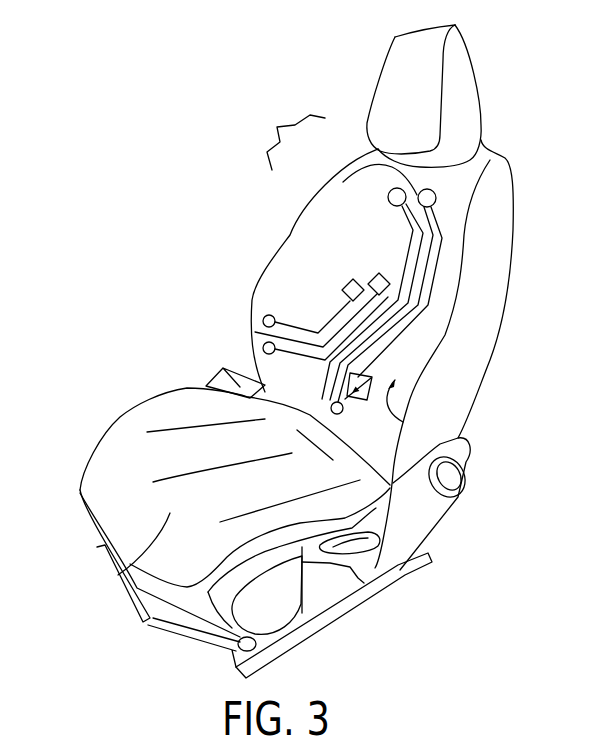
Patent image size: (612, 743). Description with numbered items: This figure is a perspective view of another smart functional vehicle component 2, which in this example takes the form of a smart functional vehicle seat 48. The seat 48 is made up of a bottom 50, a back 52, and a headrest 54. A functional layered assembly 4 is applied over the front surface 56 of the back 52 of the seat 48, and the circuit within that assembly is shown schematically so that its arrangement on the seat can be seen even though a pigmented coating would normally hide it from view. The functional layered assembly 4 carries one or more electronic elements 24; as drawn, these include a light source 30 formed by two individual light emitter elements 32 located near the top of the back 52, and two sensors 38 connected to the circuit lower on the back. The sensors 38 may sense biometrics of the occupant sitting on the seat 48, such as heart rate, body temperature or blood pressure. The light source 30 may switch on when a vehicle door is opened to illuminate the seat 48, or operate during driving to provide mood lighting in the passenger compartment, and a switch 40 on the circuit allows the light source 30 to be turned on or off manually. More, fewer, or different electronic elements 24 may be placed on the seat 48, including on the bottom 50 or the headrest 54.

The smart functional vehicle component 2 is at (289, 351).
The smart functional vehicle seat 48 is at (330, 60).
The light source 30 is at (266, 137).
The electronic elements 24 is at (284, 259).
The light emitter elements 32 is at (420, 191).
The sensors 38 is at (379, 273).
The switch 40 is at (345, 383).
The headrest 54 is at (470, 95).
The functional layered assembly 4 is at (407, 353).
The back 52 is at (443, 382).
The front surface 56 is at (403, 422).
The bottom 50 is at (130, 564).